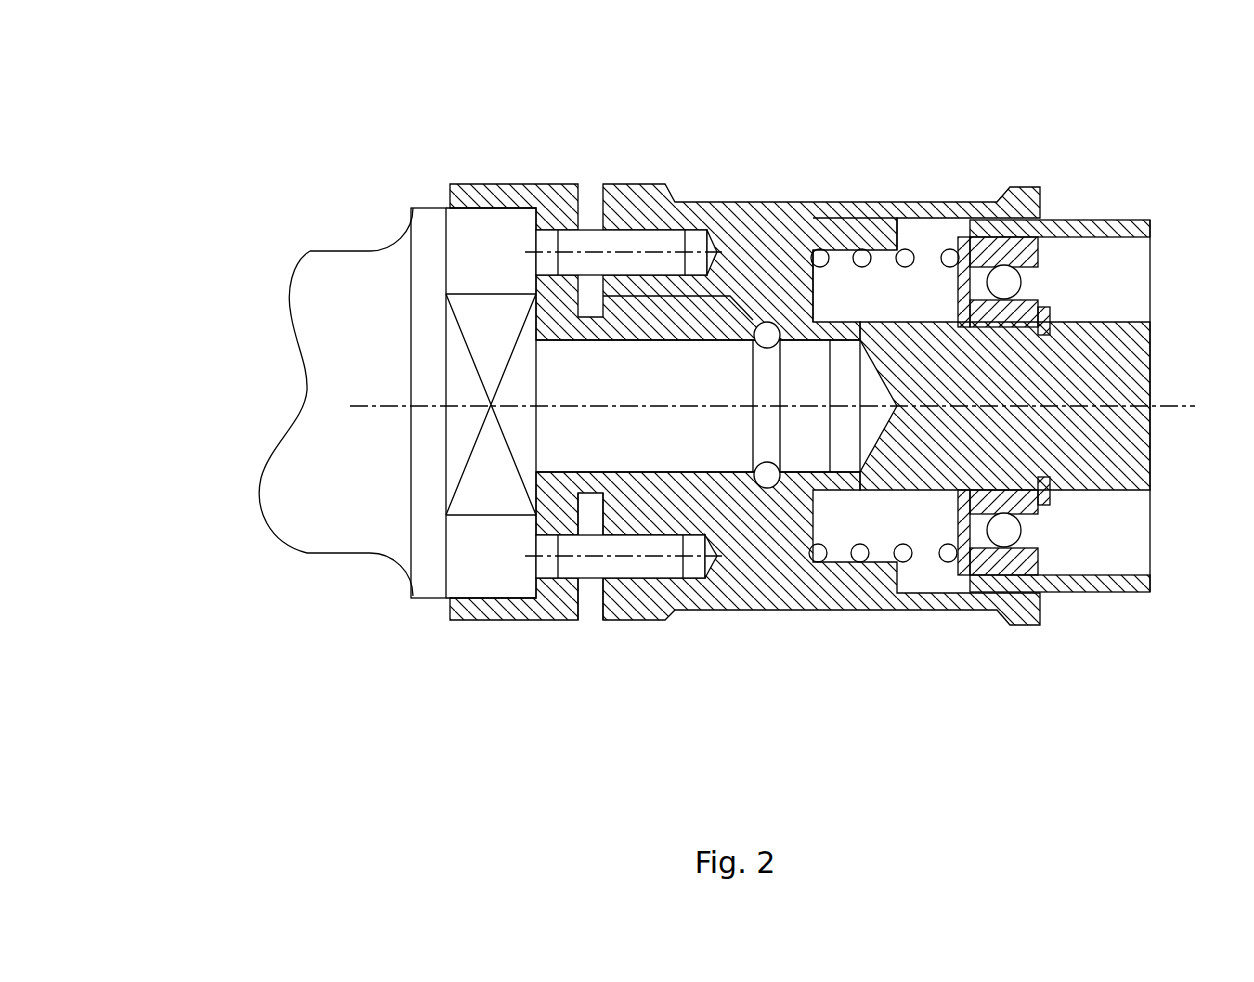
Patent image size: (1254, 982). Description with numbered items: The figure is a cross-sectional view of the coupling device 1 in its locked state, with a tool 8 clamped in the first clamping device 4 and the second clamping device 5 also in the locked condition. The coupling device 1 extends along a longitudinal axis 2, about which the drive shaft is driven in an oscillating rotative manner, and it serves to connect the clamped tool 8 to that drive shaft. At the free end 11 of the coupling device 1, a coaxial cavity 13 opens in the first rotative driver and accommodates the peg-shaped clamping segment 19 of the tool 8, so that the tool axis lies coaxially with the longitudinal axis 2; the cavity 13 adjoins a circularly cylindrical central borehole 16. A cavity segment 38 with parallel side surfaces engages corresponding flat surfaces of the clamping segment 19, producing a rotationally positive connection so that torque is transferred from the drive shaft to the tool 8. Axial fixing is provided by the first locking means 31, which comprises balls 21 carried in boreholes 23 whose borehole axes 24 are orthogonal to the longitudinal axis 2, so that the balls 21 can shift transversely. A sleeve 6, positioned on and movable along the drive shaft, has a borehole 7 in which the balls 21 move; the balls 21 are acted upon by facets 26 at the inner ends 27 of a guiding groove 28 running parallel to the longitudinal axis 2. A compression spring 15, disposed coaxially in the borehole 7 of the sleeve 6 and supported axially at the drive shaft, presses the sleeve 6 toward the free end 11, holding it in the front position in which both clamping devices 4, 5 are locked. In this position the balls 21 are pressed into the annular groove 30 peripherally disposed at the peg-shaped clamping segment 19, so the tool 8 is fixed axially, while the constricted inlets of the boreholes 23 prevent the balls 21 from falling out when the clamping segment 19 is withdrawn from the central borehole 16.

The coupling device 1 is at (226, 134).
The longitudinal axis 2 is at (365, 403).
The first clamping device 4 is at (440, 193).
The second clamping device 5 is at (590, 190).
The sleeve 6 is at (782, 302).
The borehole of the sleeve 7 is at (815, 285).
The tool 8 is at (355, 572).
The free end 11 is at (452, 607).
The coaxial cavity 13 is at (557, 473).
The compression spring 15 is at (963, 230).
The central borehole 16 is at (877, 470).
The peg-shaped clamping segment 19 is at (700, 450).
The ball 21 is at (774, 321).
The borehole 23 is at (763, 440).
The borehole axis 24 is at (767, 330).
The facet 26 is at (745, 322).
The inner end 27 is at (762, 322).
The guiding groove 28 is at (706, 306).
The annular groove 30 is at (847, 432).
The first locking means 31 is at (773, 497).
The cavity segment 38 is at (519, 613).